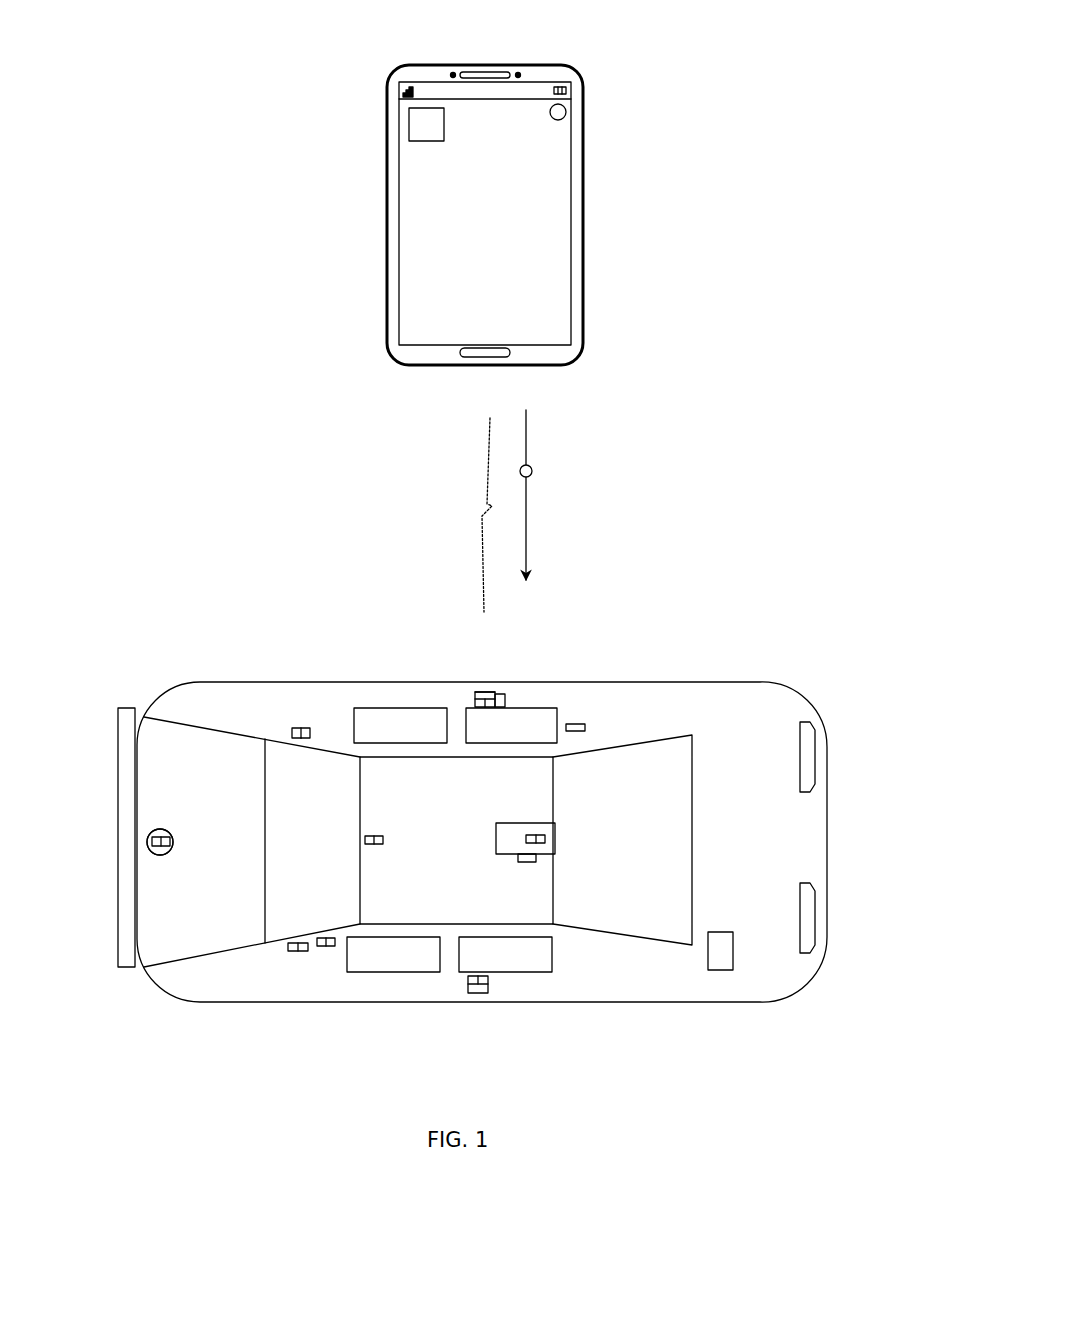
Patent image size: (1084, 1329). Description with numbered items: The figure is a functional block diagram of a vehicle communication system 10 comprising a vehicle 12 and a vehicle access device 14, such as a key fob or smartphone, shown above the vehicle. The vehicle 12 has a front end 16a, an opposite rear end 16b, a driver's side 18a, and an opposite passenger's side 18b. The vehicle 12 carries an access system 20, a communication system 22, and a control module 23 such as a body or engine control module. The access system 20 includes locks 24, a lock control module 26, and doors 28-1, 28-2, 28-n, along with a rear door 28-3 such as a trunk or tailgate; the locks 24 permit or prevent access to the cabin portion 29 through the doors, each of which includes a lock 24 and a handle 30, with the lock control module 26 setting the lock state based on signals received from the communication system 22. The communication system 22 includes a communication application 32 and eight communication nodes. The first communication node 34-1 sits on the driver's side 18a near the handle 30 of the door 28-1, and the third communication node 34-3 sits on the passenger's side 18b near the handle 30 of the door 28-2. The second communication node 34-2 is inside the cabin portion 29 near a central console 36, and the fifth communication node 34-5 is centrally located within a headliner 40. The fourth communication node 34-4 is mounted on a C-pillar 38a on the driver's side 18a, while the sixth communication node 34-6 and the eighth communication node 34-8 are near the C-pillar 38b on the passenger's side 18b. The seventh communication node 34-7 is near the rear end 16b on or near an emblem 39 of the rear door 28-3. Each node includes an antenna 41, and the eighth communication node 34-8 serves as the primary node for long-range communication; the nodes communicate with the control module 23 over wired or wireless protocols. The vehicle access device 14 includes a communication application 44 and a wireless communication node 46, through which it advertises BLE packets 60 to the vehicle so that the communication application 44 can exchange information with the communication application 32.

The vehicle communication system 10 is at (806, 50).
The vehicle 12 is at (799, 654).
The vehicle access device 14 is at (594, 49).
The front end 16a is at (827, 775).
The rear end 16b is at (120, 735).
The driver's side 18a is at (312, 682).
The passenger's side 18b is at (272, 1003).
The access system 20 is at (577, 694).
The communication system 22 is at (582, 838).
The control module 23 is at (733, 950).
The lock 24 is at (500, 693).
The lock control module 26 is at (585, 727).
The door 28-1 is at (508, 685).
The door 28-2 is at (512, 988).
The rear door 28-3 is at (168, 918).
The door 28-n is at (372, 1000).
The cabin portion 29 is at (534, 896).
The handle 30 is at (478, 692).
The communication application 32 is at (536, 858).
The first communication node 34-1 is at (478, 700).
The second communication node 34-2 is at (537, 832).
The third communication node 34-3 is at (468, 985).
The fourth communication node 34-4 is at (292, 732).
The fifth communication node 34-5 is at (374, 830).
The sixth communication node 34-6 is at (292, 952).
The seventh communication node 34-7 is at (167, 830).
The eighth communication node 34-8 is at (335, 946).
The console 36 is at (496, 838).
The C-pillar 38a is at (348, 750).
The C-pillar 38b is at (337, 928).
The emblem 39 is at (172, 852).
The headliner 40 is at (362, 824).
The antenna 41 is at (301, 738).
The communication application 44 is at (444, 124).
The wireless communication node 46 is at (556, 120).
The BLE packets 60 is at (532, 471).